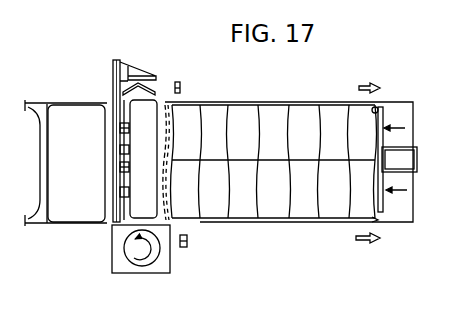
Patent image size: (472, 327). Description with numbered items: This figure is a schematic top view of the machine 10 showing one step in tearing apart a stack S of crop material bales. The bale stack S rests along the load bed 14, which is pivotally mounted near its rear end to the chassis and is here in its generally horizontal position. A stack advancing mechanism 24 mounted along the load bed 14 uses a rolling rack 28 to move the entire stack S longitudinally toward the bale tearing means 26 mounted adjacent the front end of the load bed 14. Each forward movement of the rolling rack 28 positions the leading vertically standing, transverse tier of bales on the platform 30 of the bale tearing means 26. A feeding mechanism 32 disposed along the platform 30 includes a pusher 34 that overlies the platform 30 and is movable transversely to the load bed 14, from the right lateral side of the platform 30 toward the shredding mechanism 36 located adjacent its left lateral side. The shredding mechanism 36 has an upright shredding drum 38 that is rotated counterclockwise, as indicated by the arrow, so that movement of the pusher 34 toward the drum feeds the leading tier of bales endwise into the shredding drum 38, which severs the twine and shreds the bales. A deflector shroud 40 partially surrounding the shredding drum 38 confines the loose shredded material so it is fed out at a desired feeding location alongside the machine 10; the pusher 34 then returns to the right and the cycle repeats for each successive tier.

The machine 10 is at (155, 63).
The load bed 14 is at (408, 110).
The stack advancing mechanism 24 is at (426, 161).
The bale tearing means 26 is at (105, 100).
The rolling rack 28 is at (384, 211).
The platform 30 is at (126, 195).
The feeding mechanism 32 is at (116, 48).
The pusher 34 is at (157, 77).
The shredding mechanism 36 is at (185, 264).
The shredding drum 38 is at (137, 262).
The deflector shroud 40 is at (113, 240).
The bale stack S is at (301, 99).